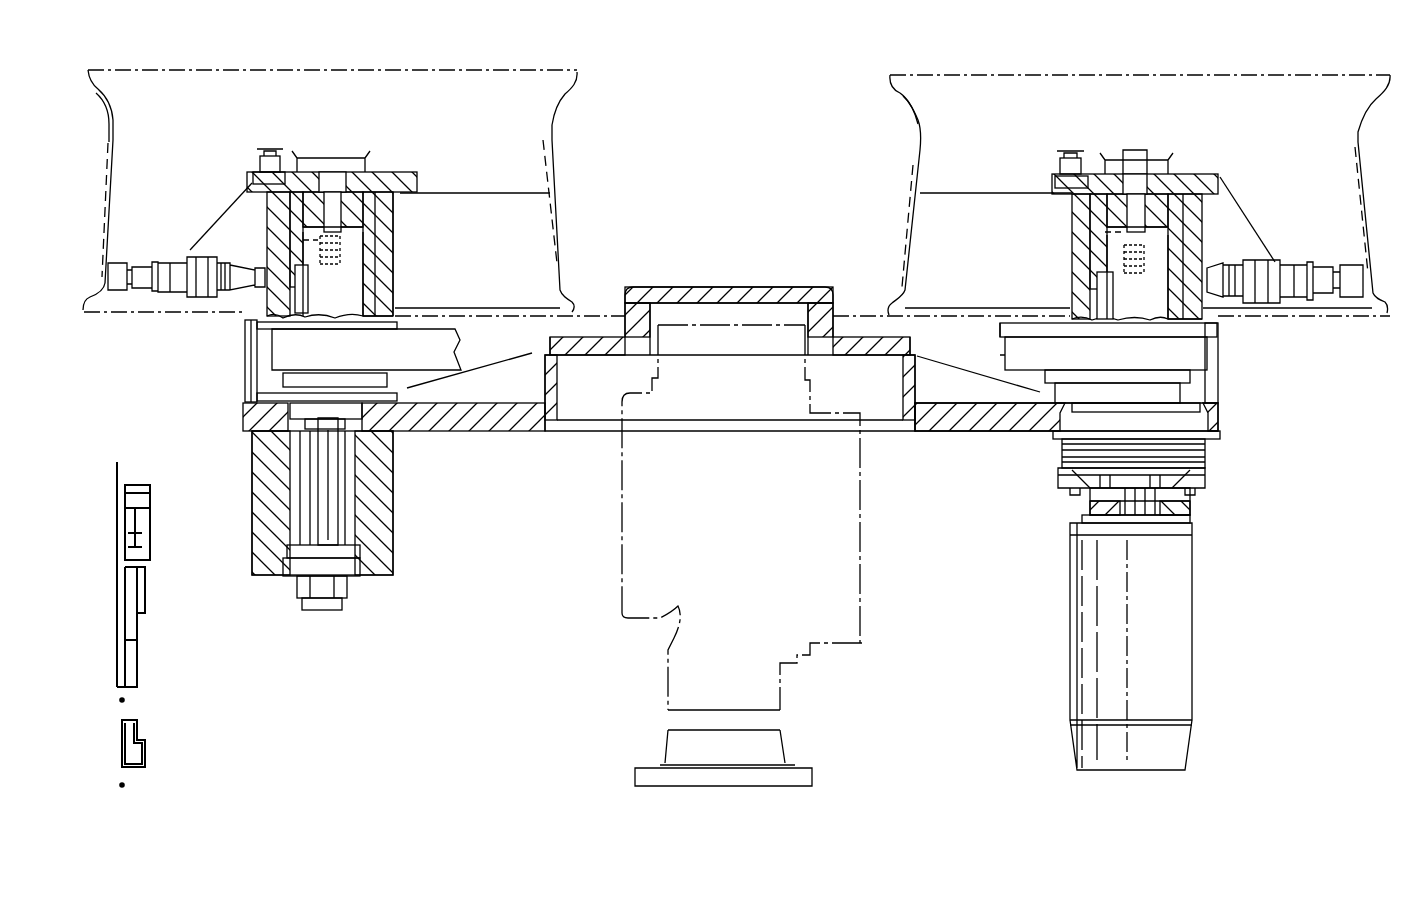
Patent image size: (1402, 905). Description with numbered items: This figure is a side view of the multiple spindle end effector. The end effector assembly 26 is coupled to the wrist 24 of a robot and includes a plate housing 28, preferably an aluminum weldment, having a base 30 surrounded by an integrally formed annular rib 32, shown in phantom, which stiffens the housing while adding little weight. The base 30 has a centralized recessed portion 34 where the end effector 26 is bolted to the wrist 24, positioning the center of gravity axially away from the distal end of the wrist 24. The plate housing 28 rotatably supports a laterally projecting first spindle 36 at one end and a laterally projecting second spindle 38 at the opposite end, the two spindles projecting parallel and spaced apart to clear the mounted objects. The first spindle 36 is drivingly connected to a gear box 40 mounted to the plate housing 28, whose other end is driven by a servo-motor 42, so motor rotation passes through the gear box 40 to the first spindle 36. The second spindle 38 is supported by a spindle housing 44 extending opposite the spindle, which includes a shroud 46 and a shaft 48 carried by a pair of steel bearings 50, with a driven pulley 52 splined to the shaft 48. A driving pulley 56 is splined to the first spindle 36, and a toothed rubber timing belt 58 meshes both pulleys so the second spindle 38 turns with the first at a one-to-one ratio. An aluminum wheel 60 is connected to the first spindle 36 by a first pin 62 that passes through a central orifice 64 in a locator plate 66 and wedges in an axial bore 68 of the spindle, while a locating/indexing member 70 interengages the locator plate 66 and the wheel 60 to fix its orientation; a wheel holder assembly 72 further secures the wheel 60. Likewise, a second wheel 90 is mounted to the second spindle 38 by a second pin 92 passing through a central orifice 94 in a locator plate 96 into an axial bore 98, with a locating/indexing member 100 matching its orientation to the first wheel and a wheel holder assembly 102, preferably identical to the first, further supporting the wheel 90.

The wrist 24 is at (662, 745).
The end effector assembly 26 is at (1282, 513).
The plate housing 28 is at (908, 437).
The base 30 is at (975, 431).
The annular rib 32 is at (245, 390).
The recessed portion 34 is at (888, 365).
The first spindle 36 is at (1190, 327).
The second spindle 38 is at (322, 297).
The gear box 40 is at (1228, 410).
The servo-motor 42 is at (1183, 610).
The spindle housing 44 is at (255, 497).
The shroud 46 is at (252, 562).
The shaft 48 is at (333, 497).
The steel bearings 50 is at (283, 570).
The driven pulley 52 is at (383, 378).
The driving pulley 56 is at (1047, 437).
The timing belt 58 is at (435, 352).
The aluminum wheel 60 is at (933, 150).
The first pin 62 is at (1165, 175).
The central orifice 64 is at (1102, 168).
The locator plate 66 is at (1053, 188).
The axial bore 68 is at (1088, 234).
The locating/indexing member 70 is at (1067, 167).
The wheel holder assembly 72 is at (1296, 322).
The wheel 90 is at (533, 112).
The second pin 92 is at (393, 217).
The central orifice 94 is at (314, 200).
The locator plate 96 is at (255, 180).
The axial bore 98 is at (300, 240).
The locating/indexing member 100 is at (267, 156).
The wheel holder assembly 102 is at (178, 322).